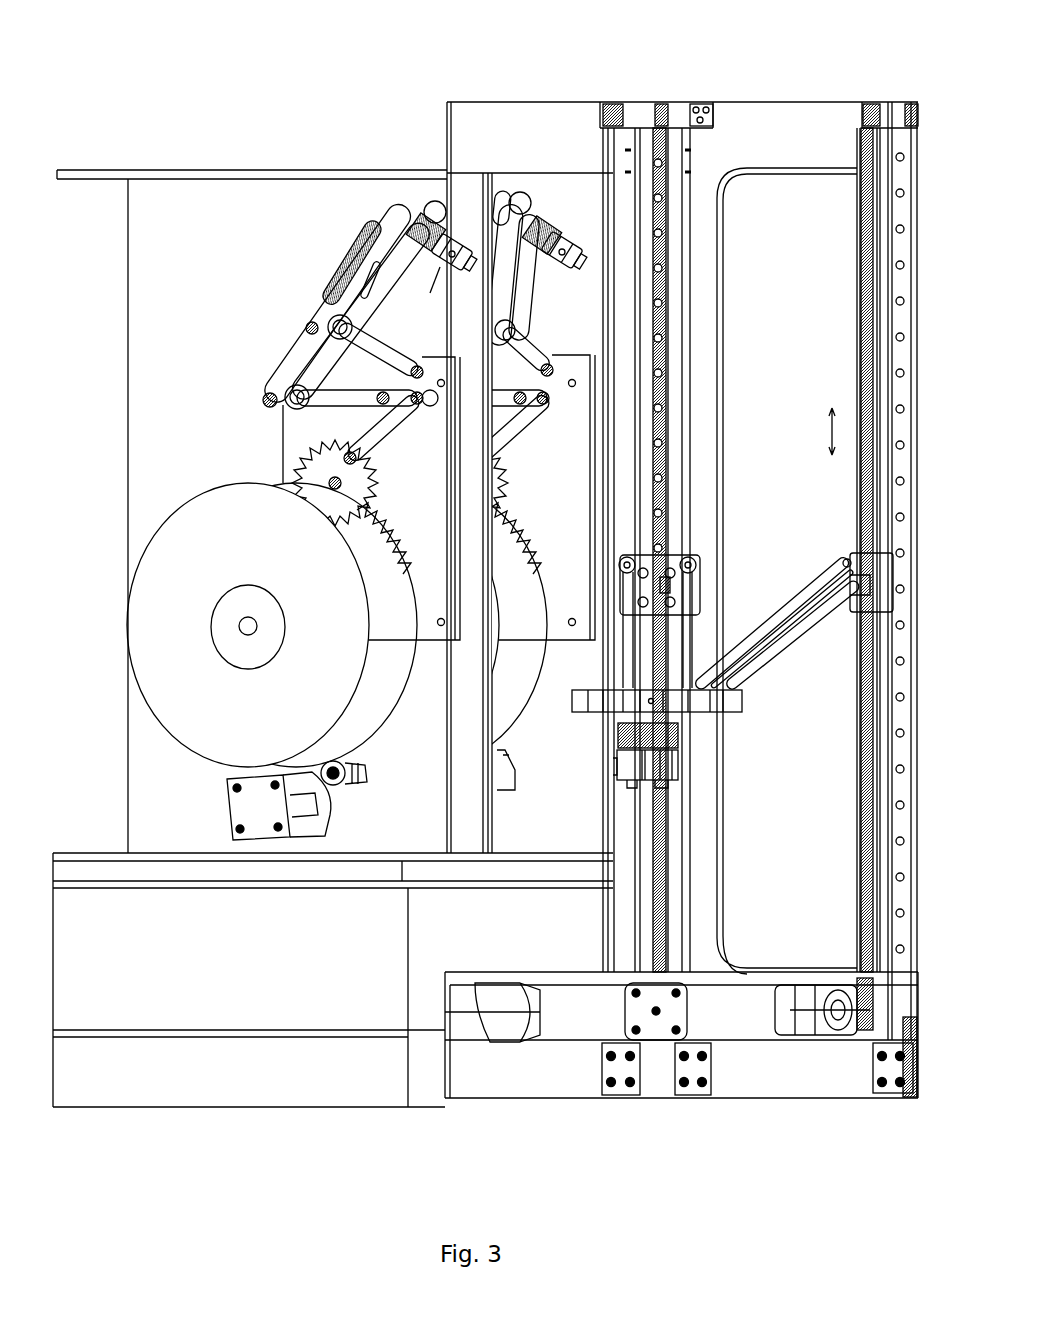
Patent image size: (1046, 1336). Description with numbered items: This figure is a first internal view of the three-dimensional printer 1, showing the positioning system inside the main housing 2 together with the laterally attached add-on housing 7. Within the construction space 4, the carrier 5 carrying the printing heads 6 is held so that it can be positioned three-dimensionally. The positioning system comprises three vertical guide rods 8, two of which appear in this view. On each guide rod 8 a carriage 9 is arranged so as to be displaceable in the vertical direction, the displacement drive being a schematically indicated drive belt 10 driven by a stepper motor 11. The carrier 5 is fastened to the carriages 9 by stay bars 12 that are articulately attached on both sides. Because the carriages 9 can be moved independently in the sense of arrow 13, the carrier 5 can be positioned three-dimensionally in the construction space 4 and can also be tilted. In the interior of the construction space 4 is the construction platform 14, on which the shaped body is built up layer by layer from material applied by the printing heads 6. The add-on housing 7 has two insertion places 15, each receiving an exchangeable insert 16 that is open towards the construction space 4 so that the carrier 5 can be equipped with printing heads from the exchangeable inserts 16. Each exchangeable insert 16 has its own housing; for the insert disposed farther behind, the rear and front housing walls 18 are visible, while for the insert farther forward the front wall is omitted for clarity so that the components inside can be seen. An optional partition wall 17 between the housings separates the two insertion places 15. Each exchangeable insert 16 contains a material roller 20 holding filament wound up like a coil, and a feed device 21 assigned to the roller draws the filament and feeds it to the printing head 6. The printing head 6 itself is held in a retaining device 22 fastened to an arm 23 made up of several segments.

The 3D printer 1 is at (666, 48).
The main housing 2 is at (805, 110).
The construction space 4 is at (798, 847).
The carrier 5 is at (735, 712).
The printing head 6 is at (616, 770).
The add-on housing 7 is at (333, 168).
The guide rod 8 is at (672, 364).
The carriage 9 is at (882, 580).
The drive belt 10 is at (666, 252).
The stepper motor 11 is at (650, 1012).
The stay bar 12 is at (775, 642).
The arrow 13 is at (817, 431).
The construction platform 14 is at (748, 970).
The insertion place 15 is at (207, 212).
The exchangeable insert 16 is at (296, 192).
The partition wall 17 is at (403, 232).
The housing wall 18 is at (455, 195).
The material roller 20 is at (150, 631).
The feed device 21 is at (255, 805).
The retaining device 22 is at (395, 200).
The arm 23 is at (256, 335).